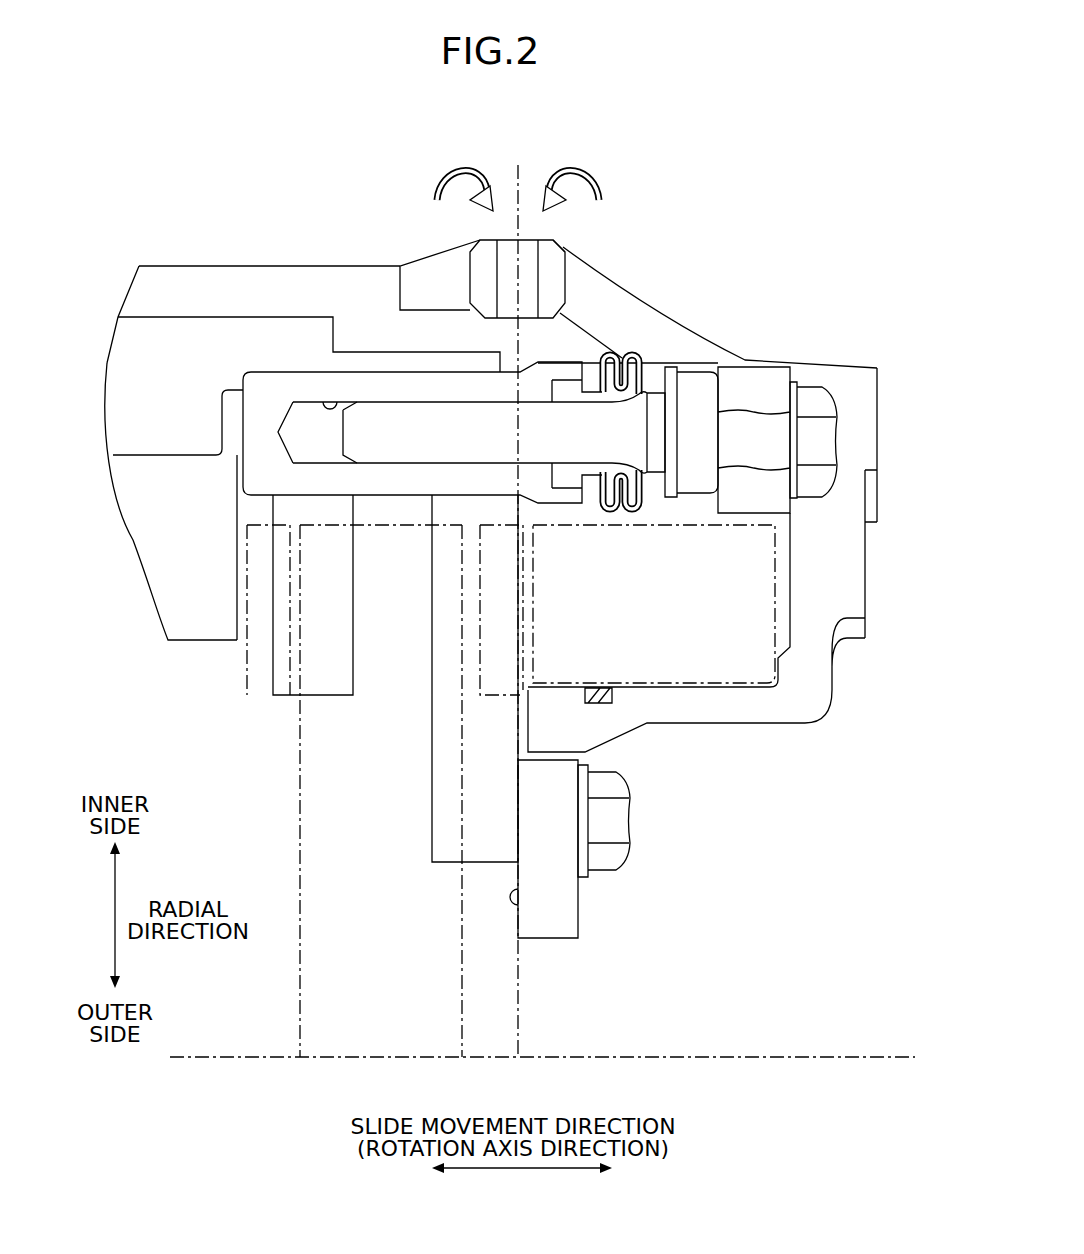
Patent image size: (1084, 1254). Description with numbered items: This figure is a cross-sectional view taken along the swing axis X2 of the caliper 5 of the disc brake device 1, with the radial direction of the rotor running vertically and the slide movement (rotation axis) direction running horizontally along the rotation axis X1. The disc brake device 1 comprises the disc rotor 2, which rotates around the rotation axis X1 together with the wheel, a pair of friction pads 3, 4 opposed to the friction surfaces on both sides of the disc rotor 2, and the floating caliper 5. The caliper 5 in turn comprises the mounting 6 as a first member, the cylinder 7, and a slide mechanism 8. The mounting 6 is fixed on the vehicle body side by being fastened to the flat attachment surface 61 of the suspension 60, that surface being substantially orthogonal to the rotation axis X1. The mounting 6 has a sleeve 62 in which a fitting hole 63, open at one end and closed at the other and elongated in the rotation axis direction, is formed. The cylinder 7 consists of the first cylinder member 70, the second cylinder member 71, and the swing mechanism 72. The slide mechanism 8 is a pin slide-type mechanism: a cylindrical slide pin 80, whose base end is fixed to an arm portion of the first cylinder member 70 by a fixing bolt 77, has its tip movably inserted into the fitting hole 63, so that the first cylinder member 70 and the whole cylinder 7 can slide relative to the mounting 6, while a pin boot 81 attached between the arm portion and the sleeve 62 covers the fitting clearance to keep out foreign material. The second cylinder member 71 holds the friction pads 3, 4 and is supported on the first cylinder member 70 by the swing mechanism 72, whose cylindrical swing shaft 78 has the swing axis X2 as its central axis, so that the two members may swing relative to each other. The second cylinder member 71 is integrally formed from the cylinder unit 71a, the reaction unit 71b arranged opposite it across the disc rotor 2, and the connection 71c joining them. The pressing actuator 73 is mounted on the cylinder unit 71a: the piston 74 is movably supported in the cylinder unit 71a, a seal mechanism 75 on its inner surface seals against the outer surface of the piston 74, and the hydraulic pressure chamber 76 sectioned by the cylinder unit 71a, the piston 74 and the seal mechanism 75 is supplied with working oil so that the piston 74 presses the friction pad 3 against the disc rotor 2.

The disc brake device 1 is at (86, 600).
The disc rotor 2 is at (291, 742).
The friction pad 3 is at (469, 670).
The friction pad 4 is at (236, 652).
The caliper 5 is at (129, 603).
The mounting 6 is at (283, 356).
The cylinder 7 is at (797, 162).
The slide mechanism 8 is at (402, 207).
The suspension 60 is at (593, 920).
The attachment surface 61 is at (523, 905).
The sleeve 62 is at (253, 468).
The fitting hole 63 is at (331, 410).
The first cylinder member 70 is at (652, 298).
The second cylinder member 71 is at (588, 318).
The cylinder unit 71a is at (847, 587).
The reaction unit 71b is at (143, 545).
The connection 71c is at (166, 282).
The swing mechanism 72 is at (573, 243).
The pressing actuator 73 is at (729, 496).
The piston 74 is at (720, 690).
The seal mechanism 75 is at (598, 705).
The hydraulic pressure chamber 76 is at (780, 552).
The fixing bolt 77 is at (815, 400).
The swing shaft 78 is at (503, 249).
The slide pin 80 is at (383, 392).
The pin boot 81 is at (655, 377).
The rotation axis X1 is at (845, 1052).
The swing axis X2 is at (522, 168).